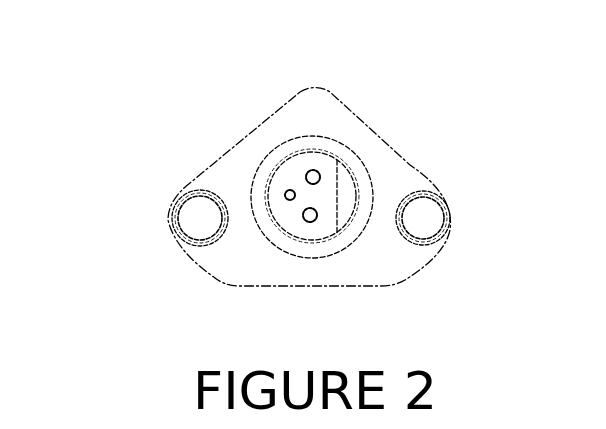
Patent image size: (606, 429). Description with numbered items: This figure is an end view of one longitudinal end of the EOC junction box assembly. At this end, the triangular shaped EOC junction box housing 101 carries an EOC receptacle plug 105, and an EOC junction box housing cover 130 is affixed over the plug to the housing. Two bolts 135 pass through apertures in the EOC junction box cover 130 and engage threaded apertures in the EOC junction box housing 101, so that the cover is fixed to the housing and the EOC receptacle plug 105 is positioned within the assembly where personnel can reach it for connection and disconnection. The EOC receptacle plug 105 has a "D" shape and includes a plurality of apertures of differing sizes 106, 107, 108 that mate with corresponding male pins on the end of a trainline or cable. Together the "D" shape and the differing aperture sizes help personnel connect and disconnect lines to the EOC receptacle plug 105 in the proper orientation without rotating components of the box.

The EOC junction box housing 101 is at (231, 153).
The EOC junction box housing cover 130 is at (317, 124).
The EOC receptacle plug 105 is at (322, 188).
The aperture 106 is at (288, 200).
The aperture 107 is at (314, 172).
The aperture 108 is at (313, 218).
The bolts 135 is at (192, 230).